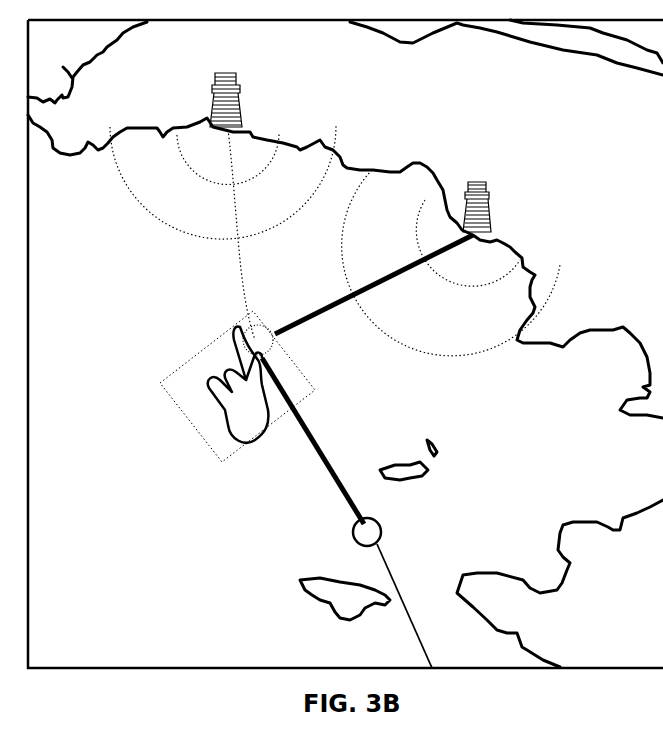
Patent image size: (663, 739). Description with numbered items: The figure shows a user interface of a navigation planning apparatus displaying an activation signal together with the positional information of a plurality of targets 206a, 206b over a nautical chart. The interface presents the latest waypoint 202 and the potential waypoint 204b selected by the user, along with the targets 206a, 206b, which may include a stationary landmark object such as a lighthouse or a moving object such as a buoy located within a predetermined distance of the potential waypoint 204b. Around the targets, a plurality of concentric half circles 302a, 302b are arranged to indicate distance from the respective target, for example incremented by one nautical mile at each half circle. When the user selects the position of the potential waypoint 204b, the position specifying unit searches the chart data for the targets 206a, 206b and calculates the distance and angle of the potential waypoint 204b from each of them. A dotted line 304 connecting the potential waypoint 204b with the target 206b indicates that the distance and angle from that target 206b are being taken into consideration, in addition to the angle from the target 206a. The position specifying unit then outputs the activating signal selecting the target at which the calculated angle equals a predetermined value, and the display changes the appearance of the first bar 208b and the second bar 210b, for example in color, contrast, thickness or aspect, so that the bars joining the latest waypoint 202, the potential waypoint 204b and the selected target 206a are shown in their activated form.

The latest waypoint 202 is at (352, 532).
The potential waypoint 204b is at (228, 337).
The target 206a is at (490, 185).
The target 206b is at (237, 78).
The first bar 208b is at (320, 450).
The second bar 210b is at (332, 308).
The concentric half circles 302a is at (447, 338).
The concentric half circles 302b is at (148, 207).
The dotted line 304 is at (240, 263).